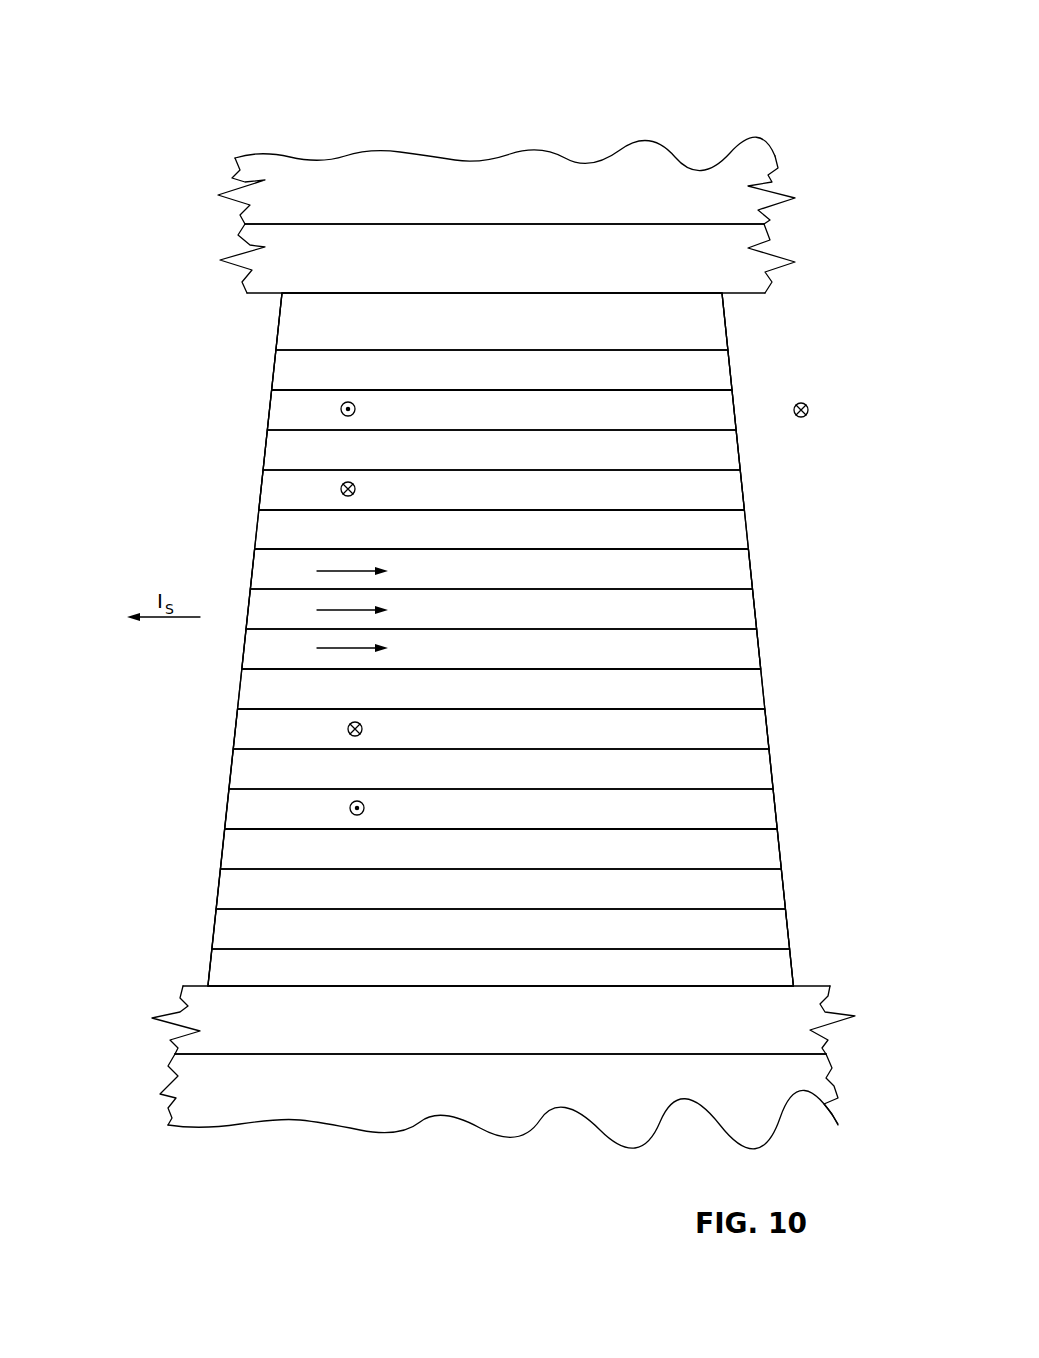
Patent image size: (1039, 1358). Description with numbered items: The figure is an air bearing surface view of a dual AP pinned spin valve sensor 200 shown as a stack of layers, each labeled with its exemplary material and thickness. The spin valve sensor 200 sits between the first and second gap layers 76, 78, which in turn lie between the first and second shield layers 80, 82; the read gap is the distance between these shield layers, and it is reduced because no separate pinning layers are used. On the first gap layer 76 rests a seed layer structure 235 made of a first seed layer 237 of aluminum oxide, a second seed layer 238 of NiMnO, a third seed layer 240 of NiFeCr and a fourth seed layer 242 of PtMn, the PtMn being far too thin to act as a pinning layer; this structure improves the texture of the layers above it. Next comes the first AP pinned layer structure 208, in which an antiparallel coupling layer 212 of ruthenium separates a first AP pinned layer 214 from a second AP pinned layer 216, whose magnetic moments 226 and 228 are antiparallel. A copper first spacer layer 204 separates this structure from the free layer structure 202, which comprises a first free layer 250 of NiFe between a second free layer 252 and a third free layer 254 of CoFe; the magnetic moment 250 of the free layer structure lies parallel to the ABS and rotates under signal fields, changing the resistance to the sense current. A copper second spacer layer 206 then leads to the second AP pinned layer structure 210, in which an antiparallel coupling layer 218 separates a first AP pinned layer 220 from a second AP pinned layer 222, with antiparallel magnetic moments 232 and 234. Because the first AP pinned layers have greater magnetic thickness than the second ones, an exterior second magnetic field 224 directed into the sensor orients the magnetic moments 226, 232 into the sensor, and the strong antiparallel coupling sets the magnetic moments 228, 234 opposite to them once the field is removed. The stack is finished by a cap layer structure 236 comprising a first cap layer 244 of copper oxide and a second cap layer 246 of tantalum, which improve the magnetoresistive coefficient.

The dual AP pinned spin valve sensor 200 is at (876, 986).
The free layer structure 202 is at (240, 669).
The second AP pinned layer structure 210 is at (245, 509).
The cap layer structure 236 is at (258, 389).
The first AP pinned layer structure 208 is at (66, 709).
The seed layer structure 235 is at (111, 829).
The second shield layer 82 is at (667, 201).
The second gap layer 78 is at (667, 270).
The first gap layer 76 is at (720, 1033).
The first shield layer 80 is at (720, 1100).
The second cap layer 246 is at (679, 336).
The first cap layer 244 is at (681, 380).
The second AP pinned layer 222 is at (684, 420).
The magnetic moment 234 is at (343, 404).
The antiparallel coupling layer 218 is at (687, 460).
The first AP pinned layer 220 is at (689, 500).
The magnetic moment 232 is at (343, 485).
The second spacer layer 206 is at (692, 540).
The third free layer 254 is at (695, 580).
The first free layer 250 is at (697, 619).
The second free layer 252 is at (699, 659).
The first spacer layer 204 is at (699, 699).
The first AP pinned layer 214 is at (699, 739).
The magnetic moment 226 is at (347, 729).
The antiparallel coupling layer 212 is at (701, 779).
The second AP pinned layer 216 is at (704, 819).
The magnetic moment 228 is at (349, 808).
The fourth seed layer 242 is at (711, 859).
The third seed layer 240 is at (714, 899).
The second seed layer 238 is at (718, 939).
The first seed layer 237 is at (721, 977).
The second magnetic field 224 is at (798, 401).